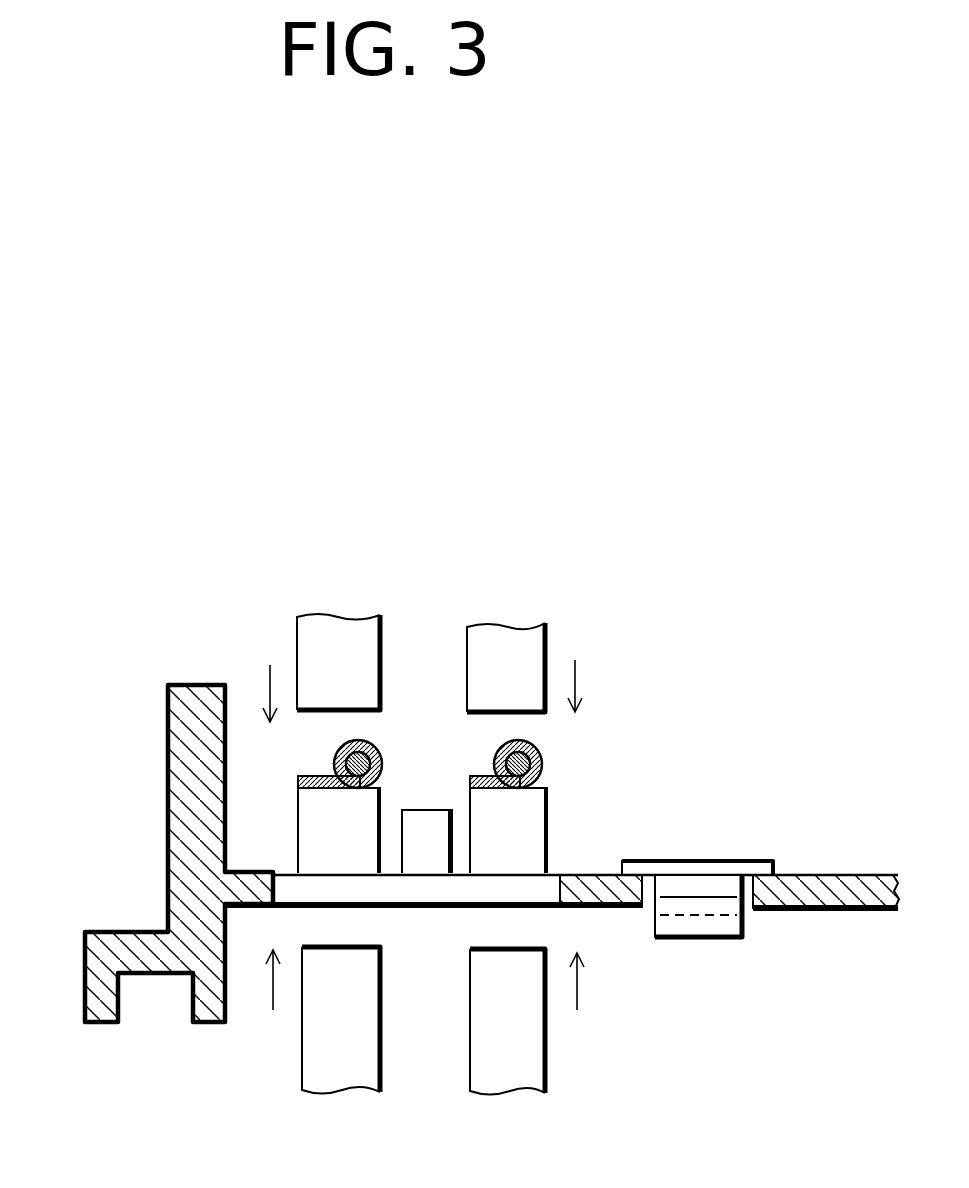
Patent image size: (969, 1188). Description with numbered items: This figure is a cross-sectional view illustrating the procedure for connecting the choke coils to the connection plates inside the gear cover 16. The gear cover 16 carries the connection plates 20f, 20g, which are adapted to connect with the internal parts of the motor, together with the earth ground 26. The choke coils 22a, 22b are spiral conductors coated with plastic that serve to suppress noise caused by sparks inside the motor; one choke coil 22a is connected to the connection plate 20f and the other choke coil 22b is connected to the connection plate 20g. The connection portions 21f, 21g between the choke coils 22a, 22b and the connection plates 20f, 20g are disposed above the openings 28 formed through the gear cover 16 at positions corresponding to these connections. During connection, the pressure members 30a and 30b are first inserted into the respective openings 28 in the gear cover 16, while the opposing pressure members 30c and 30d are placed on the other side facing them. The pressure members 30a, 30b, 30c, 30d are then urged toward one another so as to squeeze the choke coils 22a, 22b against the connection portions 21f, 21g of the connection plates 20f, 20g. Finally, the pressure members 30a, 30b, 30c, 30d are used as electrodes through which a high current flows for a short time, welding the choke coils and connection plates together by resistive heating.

The gear cover 16 is at (168, 833).
The connection plate 20f is at (369, 734).
The connection plate 20g is at (546, 762).
The connection portion 21f is at (354, 752).
The connection portion 21g is at (534, 741).
The choke coil 22a is at (336, 761).
The choke coil 22b is at (497, 764).
The earth ground 26 is at (704, 858).
The opening 28 is at (561, 876).
The pressure member 30a is at (308, 648).
The pressure member 30b is at (530, 647).
The pressure member 30c is at (311, 1053).
The pressure member 30d is at (545, 1063).